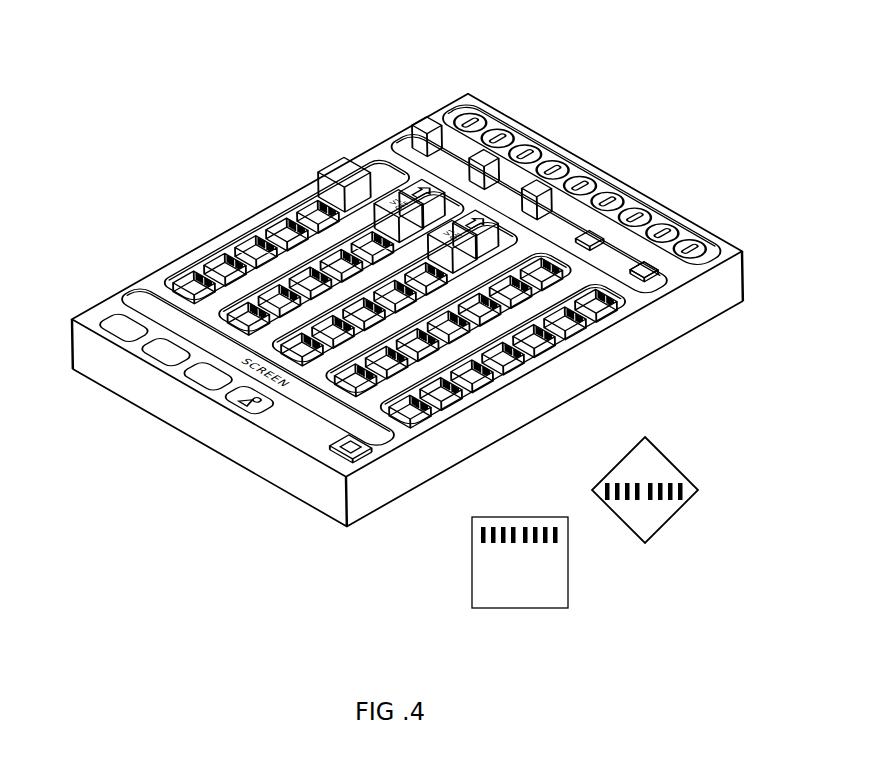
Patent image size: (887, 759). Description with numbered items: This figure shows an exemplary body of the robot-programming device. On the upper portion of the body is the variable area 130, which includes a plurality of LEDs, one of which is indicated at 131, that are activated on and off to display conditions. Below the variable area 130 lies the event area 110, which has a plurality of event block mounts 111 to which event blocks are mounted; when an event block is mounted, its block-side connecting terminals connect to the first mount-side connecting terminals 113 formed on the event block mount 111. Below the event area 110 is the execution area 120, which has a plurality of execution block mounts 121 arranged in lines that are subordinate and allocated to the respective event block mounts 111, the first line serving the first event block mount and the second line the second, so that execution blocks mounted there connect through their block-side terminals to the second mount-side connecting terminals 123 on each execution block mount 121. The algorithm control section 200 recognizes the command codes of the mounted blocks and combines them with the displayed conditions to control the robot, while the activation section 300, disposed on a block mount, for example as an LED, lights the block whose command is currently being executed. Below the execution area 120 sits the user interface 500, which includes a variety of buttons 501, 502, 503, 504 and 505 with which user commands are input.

The user interface 500 is at (237, 510).
The send button 501 is at (152, 349).
The run button 502 is at (118, 331).
The link button 503 is at (190, 378).
The indicator tile 504 is at (322, 456).
The lock button 505 is at (230, 399).
The event area 110 is at (638, 272).
The event block mount 111 is at (648, 410).
The first mount-side connecting terminals 113 is at (670, 482).
The execution area 120 is at (277, 215).
The execution block mount 121 is at (300, 212).
The second mount-side connecting terminals 123 is at (481, 530).
The variable area 130 is at (553, 155).
The dial knob 131 is at (469, 110).
The algorithm control section 200 is at (420, 122).
The activation section 300 is at (366, 157).